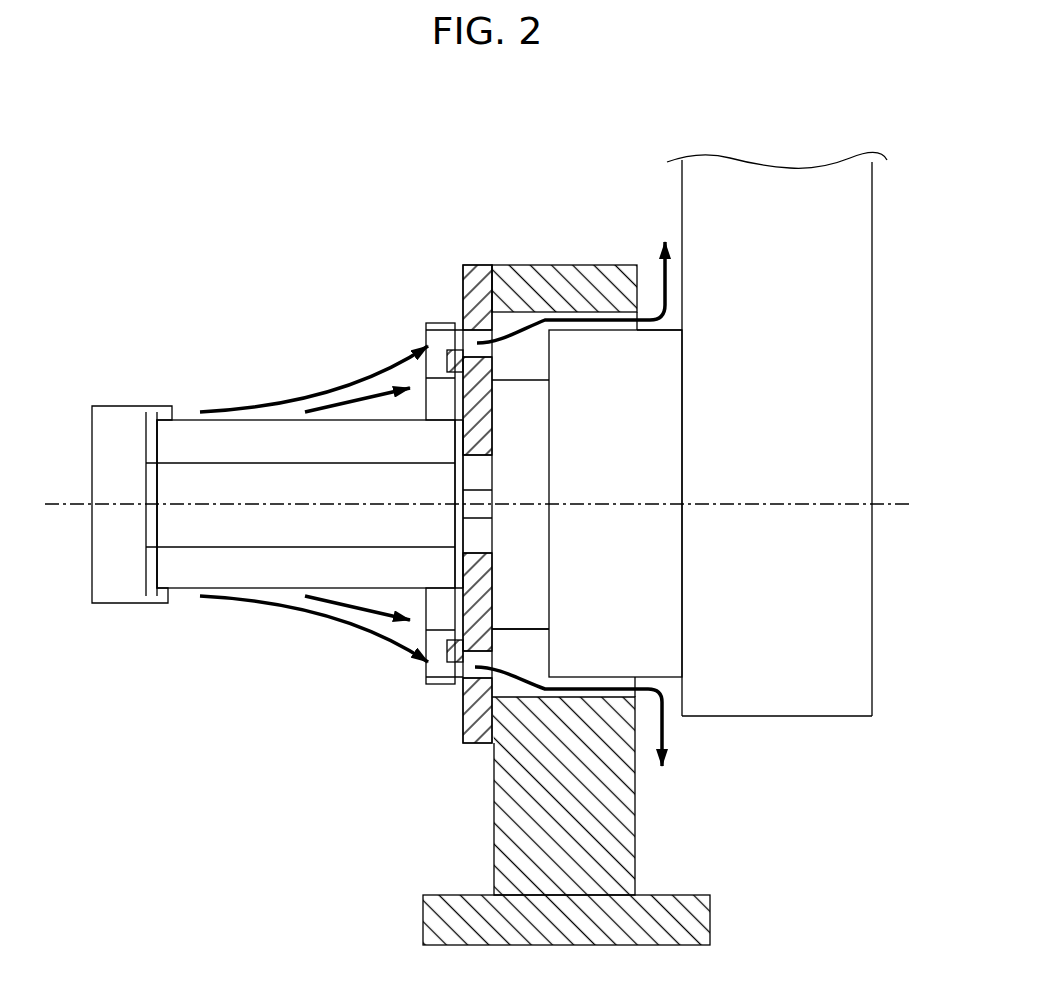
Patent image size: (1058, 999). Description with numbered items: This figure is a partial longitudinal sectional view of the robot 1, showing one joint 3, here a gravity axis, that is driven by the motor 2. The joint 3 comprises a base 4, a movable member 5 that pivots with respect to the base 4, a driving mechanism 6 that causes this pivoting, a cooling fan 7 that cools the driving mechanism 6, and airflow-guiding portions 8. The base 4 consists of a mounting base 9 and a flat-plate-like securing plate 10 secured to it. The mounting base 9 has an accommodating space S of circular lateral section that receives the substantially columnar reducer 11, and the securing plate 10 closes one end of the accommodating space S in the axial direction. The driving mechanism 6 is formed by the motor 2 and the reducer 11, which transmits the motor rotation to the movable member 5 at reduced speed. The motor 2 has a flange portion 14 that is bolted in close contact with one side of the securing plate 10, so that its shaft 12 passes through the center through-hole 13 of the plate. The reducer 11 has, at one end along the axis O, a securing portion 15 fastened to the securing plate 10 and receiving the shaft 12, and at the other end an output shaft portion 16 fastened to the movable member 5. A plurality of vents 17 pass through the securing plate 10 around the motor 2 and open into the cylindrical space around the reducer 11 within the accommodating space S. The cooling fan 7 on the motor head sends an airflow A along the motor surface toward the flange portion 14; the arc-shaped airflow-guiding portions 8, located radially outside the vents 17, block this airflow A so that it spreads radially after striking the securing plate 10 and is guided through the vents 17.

The robot 1 is at (310, 145).
The motor 2 is at (188, 598).
The joint 3 is at (715, 798).
The base 4 is at (482, 758).
The movable member 5 is at (815, 718).
The driving mechanism 6 is at (338, 378).
The cooling fan 7 is at (125, 408).
The airflow-guiding portions 8 is at (425, 685).
The mounting base 9 is at (635, 852).
The securing plate 10 is at (460, 733).
The reducer 11 is at (520, 330).
The shaft 12 is at (478, 490).
The center through-hole 13 is at (478, 553).
The flange portion 14 is at (451, 570).
The securing portion 15 is at (522, 635).
The output shaft portion 16 is at (643, 332).
The vents 17 is at (440, 334).
The axis O is at (60, 502).
The accommodating space S is at (530, 362).
The airflow A is at (257, 402).